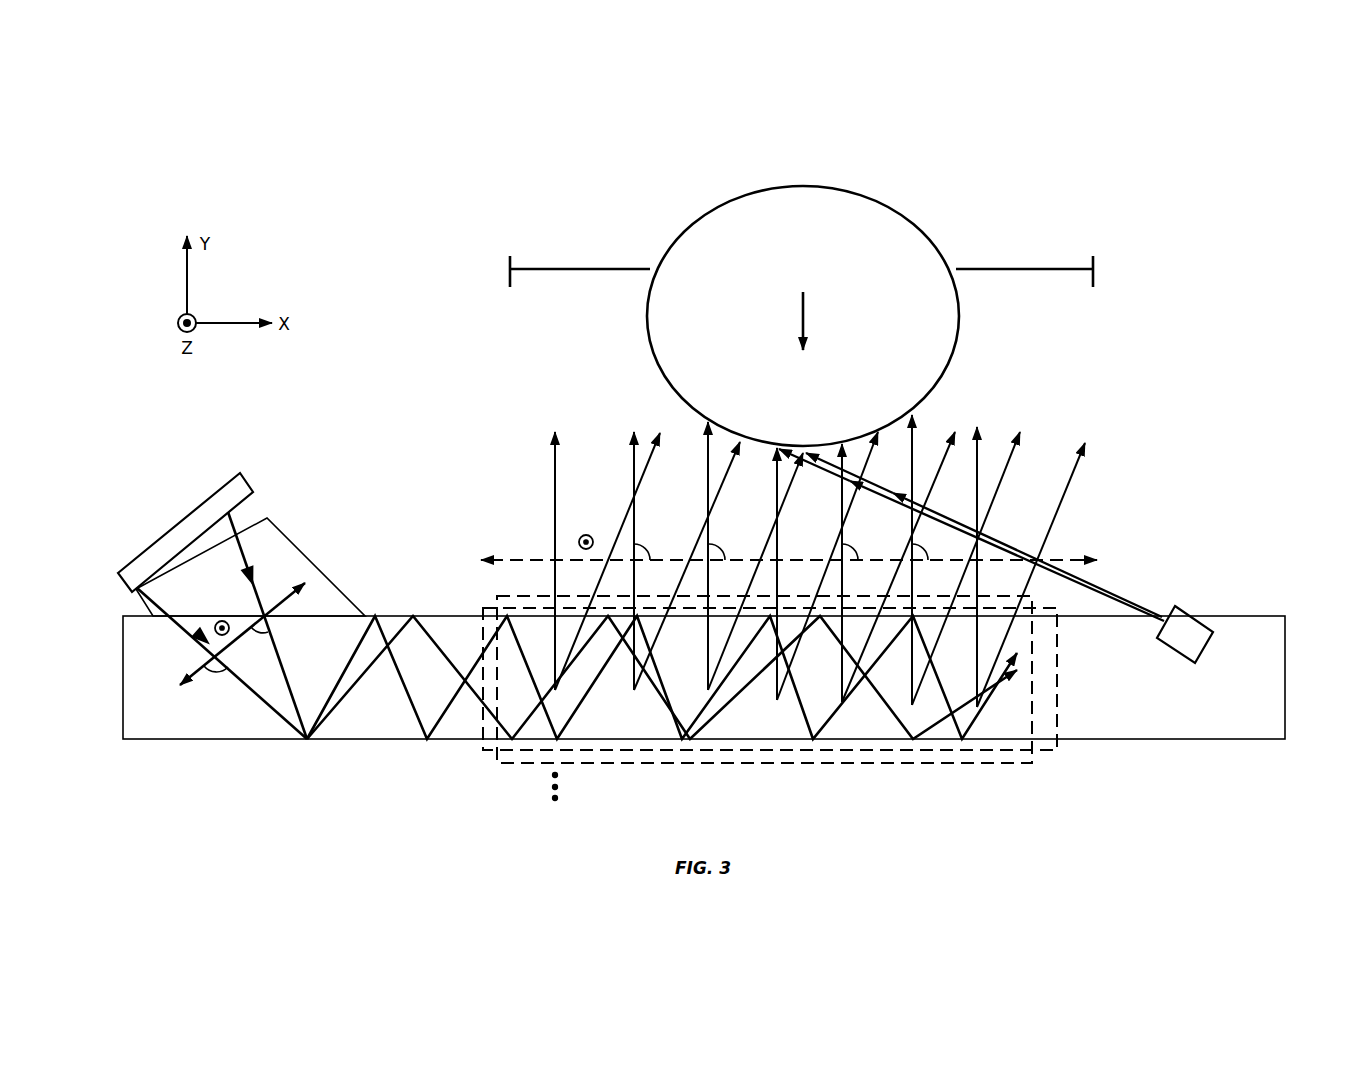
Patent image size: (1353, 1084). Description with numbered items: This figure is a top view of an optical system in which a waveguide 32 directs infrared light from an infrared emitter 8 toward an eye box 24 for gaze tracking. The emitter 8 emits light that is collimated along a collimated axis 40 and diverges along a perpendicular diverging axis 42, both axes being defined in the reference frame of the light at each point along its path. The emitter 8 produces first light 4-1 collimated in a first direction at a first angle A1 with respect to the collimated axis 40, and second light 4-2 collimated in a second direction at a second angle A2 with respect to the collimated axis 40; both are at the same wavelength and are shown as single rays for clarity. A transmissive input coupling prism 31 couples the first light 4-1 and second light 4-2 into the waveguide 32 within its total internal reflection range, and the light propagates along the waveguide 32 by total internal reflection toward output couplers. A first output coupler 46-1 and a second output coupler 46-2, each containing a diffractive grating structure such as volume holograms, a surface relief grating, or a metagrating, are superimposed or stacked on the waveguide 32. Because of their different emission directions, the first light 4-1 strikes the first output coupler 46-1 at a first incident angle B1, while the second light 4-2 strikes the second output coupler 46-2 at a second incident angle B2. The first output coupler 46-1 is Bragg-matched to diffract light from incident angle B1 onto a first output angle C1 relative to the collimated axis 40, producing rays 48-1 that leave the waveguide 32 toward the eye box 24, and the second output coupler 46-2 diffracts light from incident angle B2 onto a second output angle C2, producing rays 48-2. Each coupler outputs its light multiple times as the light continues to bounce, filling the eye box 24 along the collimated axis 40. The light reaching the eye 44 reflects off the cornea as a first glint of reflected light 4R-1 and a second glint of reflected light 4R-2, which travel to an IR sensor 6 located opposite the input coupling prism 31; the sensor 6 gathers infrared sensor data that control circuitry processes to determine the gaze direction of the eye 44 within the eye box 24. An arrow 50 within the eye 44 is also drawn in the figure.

The waveguide 32 is at (1120, 742).
The infrared emitter 8 is at (178, 535).
The input coupling prism 31 is at (313, 572).
The second light 4-2 is at (258, 532).
The first light 4-1 is at (423, 615).
The collimated axis 40 is at (285, 606).
The diverging axis 42 is at (222, 618).
The first angle A1 is at (218, 675).
The second angle A2 is at (259, 640).
The first incident angle B1 is at (457, 634).
The second incident angle B2 is at (534, 634).
The first output angle C1 is at (855, 546).
The second output angle C2 is at (647, 546).
The rays 48-2 is at (630, 468).
The rays 48-1 is at (653, 457).
The reflected light 4R-2 is at (822, 452).
The reflected light 4R-1 is at (853, 462).
The IR sensor 6 is at (1180, 643).
The second output coupler 46-2 is at (793, 751).
The first output coupler 46-1 is at (703, 765).
The eye 44 is at (803, 184).
The eye box 24 is at (1030, 266).
The gaze direction 50 is at (805, 312).